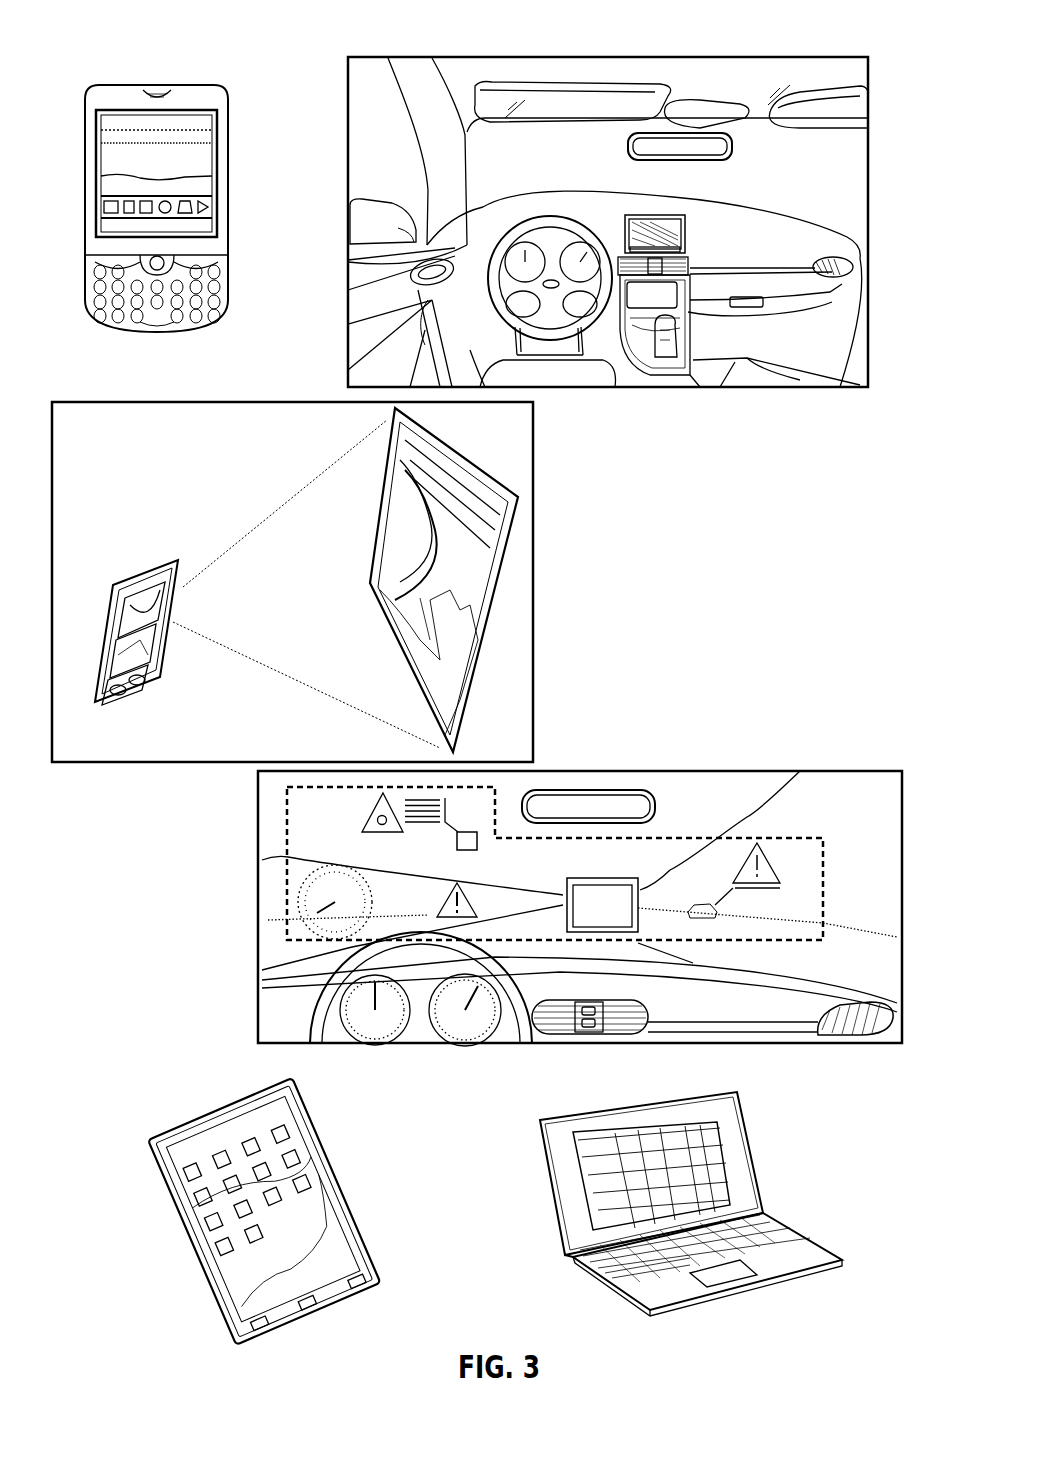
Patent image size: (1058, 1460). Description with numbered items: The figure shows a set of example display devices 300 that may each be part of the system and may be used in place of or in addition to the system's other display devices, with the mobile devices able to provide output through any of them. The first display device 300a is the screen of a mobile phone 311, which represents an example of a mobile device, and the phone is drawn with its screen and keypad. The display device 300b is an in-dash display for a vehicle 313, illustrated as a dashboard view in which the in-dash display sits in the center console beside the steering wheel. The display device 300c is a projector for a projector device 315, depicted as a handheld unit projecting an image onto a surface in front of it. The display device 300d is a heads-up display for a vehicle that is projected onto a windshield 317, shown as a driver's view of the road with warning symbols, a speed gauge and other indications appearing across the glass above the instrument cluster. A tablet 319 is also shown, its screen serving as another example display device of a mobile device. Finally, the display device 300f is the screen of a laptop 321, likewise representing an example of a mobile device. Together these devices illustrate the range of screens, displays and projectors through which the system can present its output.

The display devices 300 is at (508, 30).
The mobile phone 311 is at (200, 84).
The display device 300a is at (218, 152).
The vehicle 313 is at (760, 390).
The display device 300b is at (697, 230).
The projector device 315 is at (186, 562).
The display device 300c is at (180, 620).
The windshield 317 is at (760, 770).
The display device 300d is at (675, 838).
The tablet 319 is at (201, 1117).
The laptop 321 is at (807, 1237).
The display device 300f is at (546, 1170).